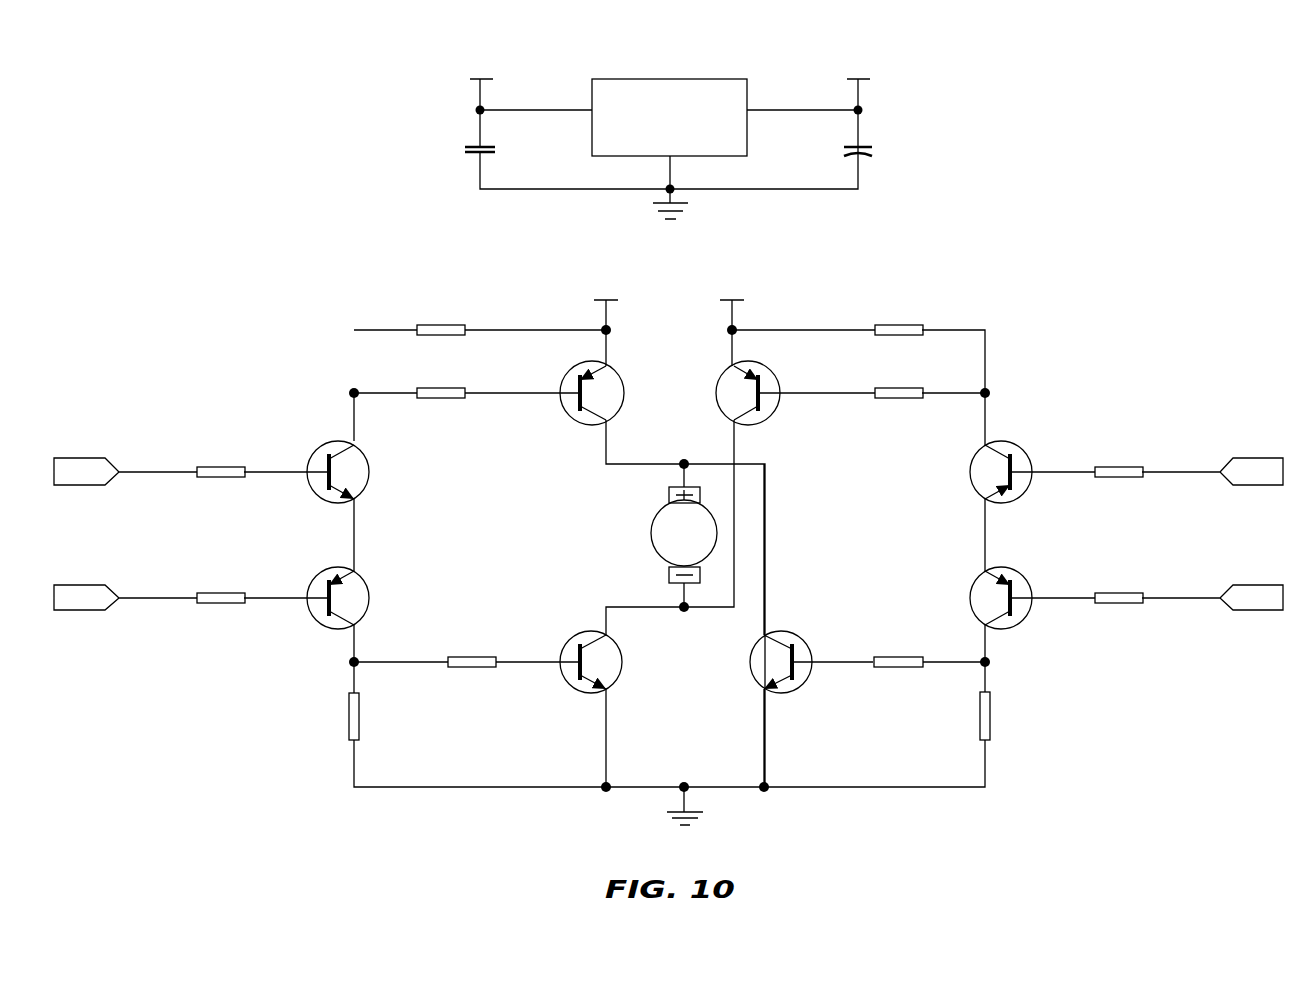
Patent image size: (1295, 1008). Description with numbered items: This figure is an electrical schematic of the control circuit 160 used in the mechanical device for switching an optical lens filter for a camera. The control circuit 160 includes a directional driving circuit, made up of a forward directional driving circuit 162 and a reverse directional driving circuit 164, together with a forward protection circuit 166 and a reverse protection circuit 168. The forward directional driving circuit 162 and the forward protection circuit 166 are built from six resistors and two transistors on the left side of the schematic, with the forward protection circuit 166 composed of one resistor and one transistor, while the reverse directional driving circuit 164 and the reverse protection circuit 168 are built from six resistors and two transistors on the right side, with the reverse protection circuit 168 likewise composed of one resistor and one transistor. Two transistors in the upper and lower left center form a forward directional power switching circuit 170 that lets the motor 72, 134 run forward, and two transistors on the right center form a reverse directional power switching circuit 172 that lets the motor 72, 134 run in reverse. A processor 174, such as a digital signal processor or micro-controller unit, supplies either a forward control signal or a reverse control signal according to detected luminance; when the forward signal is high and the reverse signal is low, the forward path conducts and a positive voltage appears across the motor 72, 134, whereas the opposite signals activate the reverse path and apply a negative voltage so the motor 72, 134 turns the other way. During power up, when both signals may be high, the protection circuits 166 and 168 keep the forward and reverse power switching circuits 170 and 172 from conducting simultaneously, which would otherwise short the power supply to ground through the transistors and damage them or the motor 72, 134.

The control circuit 160 is at (1022, 260).
The forward directional driving circuit 162 is at (462, 544).
The reverse directional driving circuit 164 is at (880, 544).
The forward protection circuit 166 is at (285, 647).
The reverse protection circuit 168 is at (1055, 648).
The forward directional power switching circuit 170 is at (560, 405).
The reverse directional power switching circuit 172 is at (780, 405).
The processor 174 is at (634, 79).
The motor 72 is at (619, 535).
The motor 134 is at (663, 524).